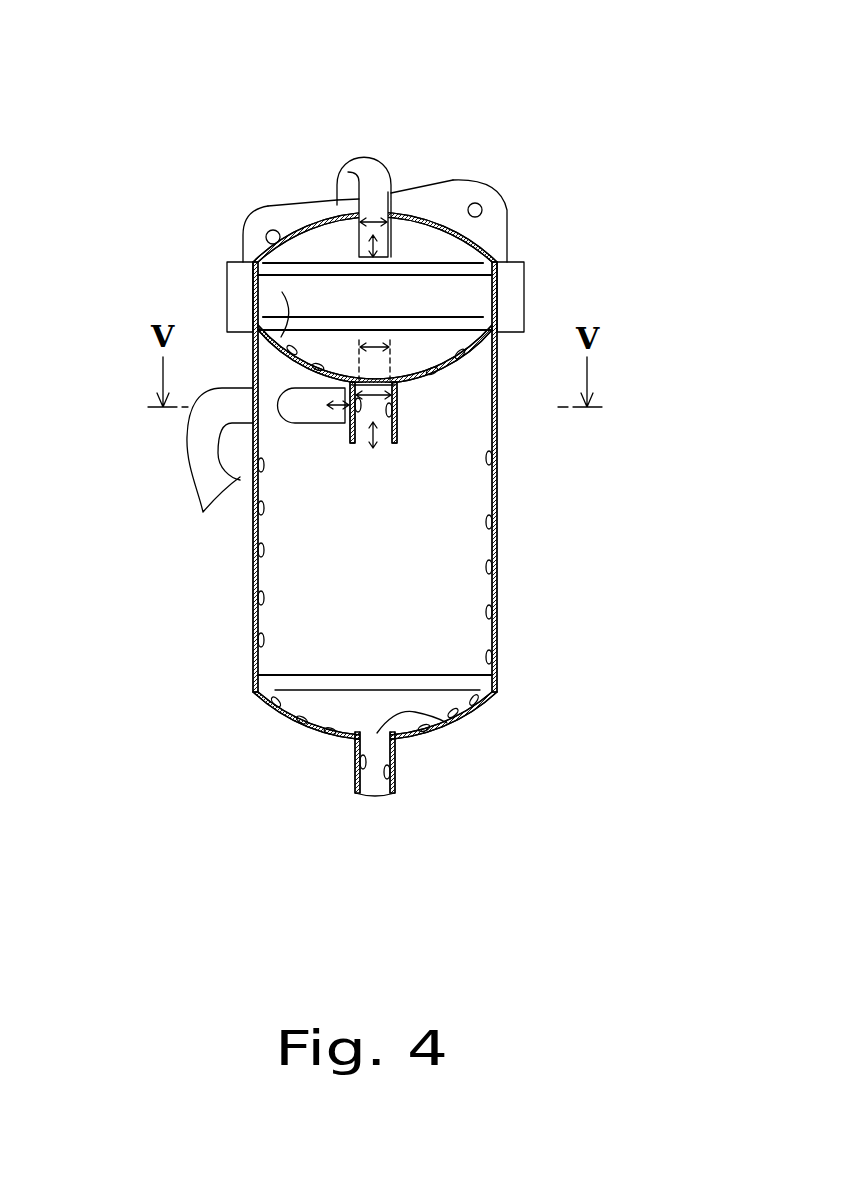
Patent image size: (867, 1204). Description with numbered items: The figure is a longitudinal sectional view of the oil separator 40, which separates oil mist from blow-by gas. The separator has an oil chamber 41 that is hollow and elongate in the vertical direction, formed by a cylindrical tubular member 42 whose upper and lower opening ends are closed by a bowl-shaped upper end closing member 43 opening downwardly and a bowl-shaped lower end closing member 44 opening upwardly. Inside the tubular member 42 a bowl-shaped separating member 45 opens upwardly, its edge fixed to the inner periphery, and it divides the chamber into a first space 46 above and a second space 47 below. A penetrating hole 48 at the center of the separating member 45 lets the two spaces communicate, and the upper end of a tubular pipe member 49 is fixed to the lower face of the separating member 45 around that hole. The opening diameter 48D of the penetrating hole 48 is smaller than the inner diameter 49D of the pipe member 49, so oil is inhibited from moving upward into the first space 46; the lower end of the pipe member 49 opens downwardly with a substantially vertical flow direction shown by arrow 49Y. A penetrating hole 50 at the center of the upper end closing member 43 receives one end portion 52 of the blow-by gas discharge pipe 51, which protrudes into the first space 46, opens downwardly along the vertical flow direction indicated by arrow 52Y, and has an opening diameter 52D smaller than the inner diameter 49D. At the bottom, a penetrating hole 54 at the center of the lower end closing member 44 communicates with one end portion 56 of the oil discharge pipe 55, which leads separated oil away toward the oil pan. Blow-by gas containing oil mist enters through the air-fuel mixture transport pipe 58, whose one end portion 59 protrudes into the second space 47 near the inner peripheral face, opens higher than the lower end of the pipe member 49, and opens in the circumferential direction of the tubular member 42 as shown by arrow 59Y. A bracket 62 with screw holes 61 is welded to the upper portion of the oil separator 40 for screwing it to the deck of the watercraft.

The oil separator 40 is at (675, 80).
The oil chamber 41 is at (520, 684).
The tubular member 42 is at (254, 612).
The upper end closing member 43 is at (468, 242).
The lower end closing member 44 is at (278, 712).
The separating member 45 is at (282, 292).
The first space 46 is at (320, 250).
The second space 47 is at (295, 542).
The penetrating hole 48 is at (377, 371).
The opening diameter 48D is at (380, 340).
The pipe member 49 is at (395, 445).
The inner diameter 49D is at (375, 402).
The flow direction arrow 49Y is at (373, 433).
The penetrating hole 50 is at (390, 208).
The blow-by gas discharge pipe 51 is at (349, 156).
The one end portion 52 is at (338, 295).
The opening diameter 52D is at (386, 200).
The flow direction arrow 52Y is at (390, 243).
The penetrating hole 54 is at (460, 717).
The oil discharge pipe 55 is at (395, 775).
The one end portion 56 is at (400, 748).
The air-fuel mixture transport pipe 58 is at (188, 425).
The one end portion 59 is at (291, 412).
The flow direction arrow 59Y is at (340, 422).
The screw holes 61 is at (266, 235).
The bracket 62 is at (508, 245).